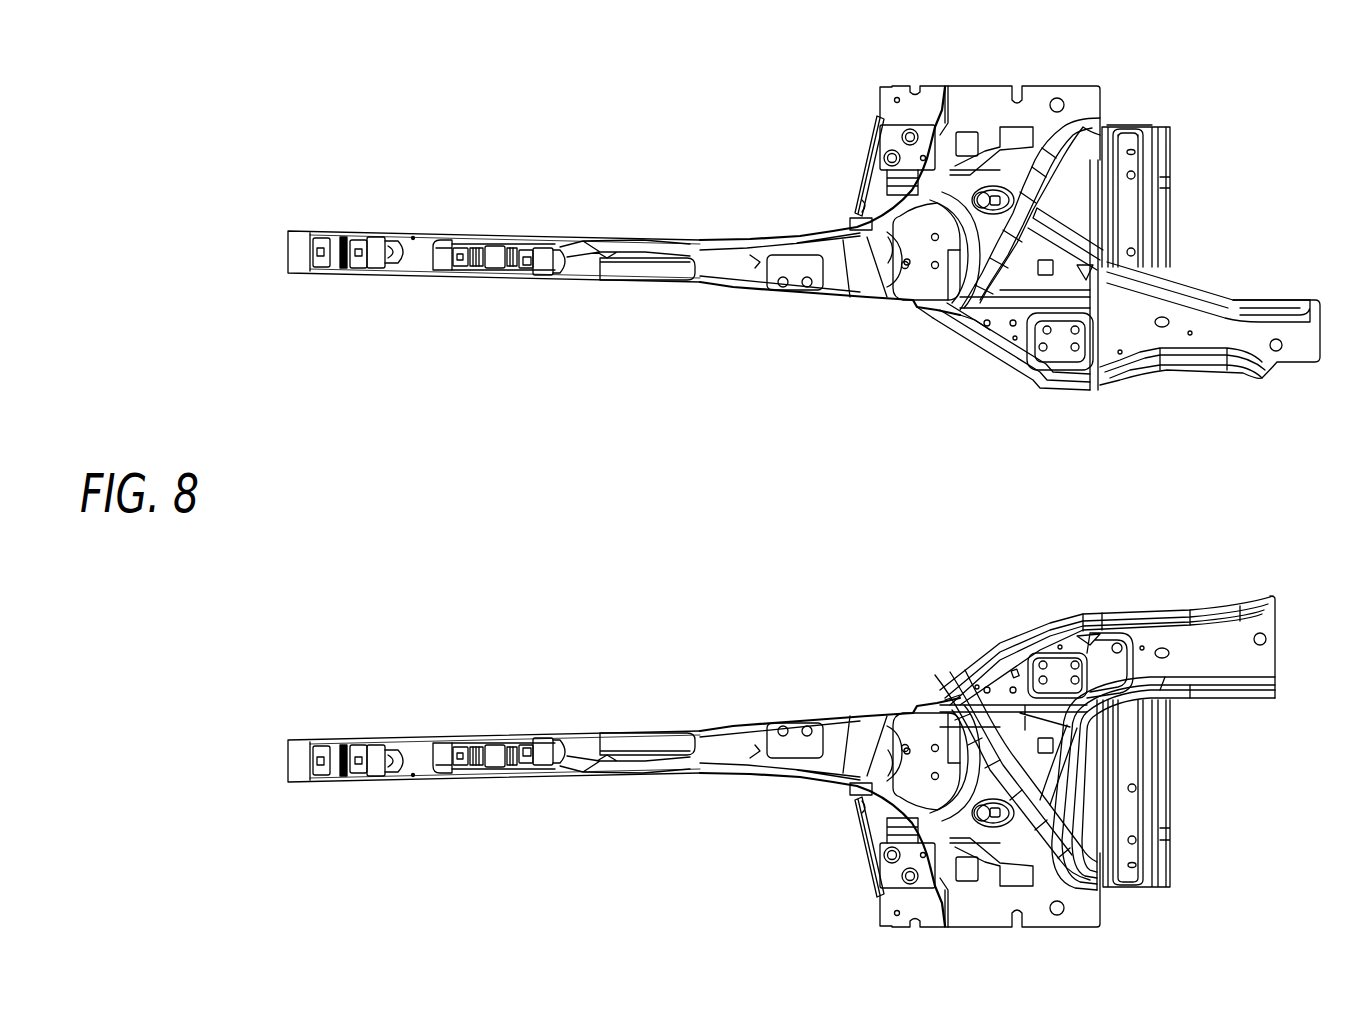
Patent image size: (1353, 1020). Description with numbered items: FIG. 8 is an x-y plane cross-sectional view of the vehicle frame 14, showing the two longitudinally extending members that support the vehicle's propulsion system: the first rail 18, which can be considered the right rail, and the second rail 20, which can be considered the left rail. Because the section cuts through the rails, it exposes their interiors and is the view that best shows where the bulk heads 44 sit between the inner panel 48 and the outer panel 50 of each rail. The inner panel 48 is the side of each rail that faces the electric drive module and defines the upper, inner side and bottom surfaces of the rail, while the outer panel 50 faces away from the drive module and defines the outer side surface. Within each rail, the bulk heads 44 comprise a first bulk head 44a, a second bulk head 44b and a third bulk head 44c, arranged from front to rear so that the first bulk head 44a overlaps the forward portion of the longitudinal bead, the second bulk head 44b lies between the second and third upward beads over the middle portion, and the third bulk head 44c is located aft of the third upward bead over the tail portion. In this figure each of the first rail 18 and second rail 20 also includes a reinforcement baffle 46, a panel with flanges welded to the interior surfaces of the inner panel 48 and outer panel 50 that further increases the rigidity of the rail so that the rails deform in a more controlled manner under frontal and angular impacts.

The vehicle frame 14 is at (215, 103).
The first rail 18 is at (380, 233).
The second rail 20 is at (388, 781).
The bulk heads 44 is at (523, 507).
The first bulk head 44a is at (335, 262).
The second bulk head 44b is at (513, 260).
The third bulk head 44c is at (667, 265).
The reinforcement baffle 46 is at (440, 262).
The inner panel 48 is at (648, 288).
The outer panel 50 is at (696, 244).